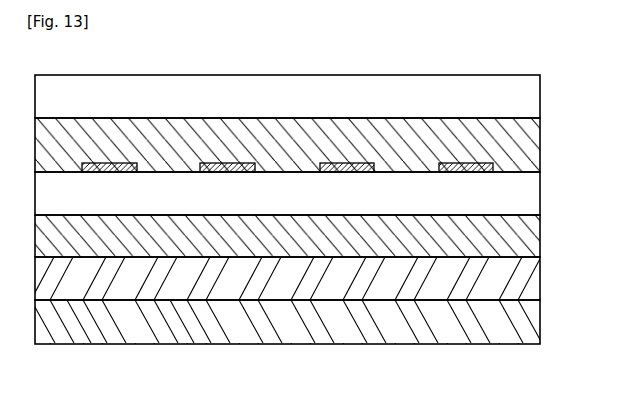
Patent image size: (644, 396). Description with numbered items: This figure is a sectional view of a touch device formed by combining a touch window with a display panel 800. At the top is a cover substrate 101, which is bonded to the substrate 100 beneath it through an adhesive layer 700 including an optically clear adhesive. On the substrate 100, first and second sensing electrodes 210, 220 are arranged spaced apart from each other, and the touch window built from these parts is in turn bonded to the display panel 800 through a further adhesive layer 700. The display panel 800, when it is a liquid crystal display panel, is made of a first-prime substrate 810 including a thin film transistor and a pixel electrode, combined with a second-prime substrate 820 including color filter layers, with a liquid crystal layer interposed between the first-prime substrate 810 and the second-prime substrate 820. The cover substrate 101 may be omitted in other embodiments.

The cover substrate 101 is at (535, 97).
The adhesive layer 700 is at (535, 141).
The substrate 100 is at (533, 195).
The first sensing electrode 210 is at (125, 163).
The second sensing electrode 220 is at (226, 172).
The display panel 800 is at (334, 300).
The second-prime substrate 820 is at (535, 281).
The first-prime substrate 810 is at (535, 322).